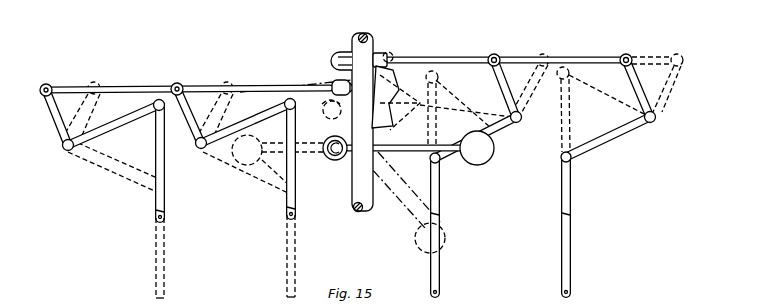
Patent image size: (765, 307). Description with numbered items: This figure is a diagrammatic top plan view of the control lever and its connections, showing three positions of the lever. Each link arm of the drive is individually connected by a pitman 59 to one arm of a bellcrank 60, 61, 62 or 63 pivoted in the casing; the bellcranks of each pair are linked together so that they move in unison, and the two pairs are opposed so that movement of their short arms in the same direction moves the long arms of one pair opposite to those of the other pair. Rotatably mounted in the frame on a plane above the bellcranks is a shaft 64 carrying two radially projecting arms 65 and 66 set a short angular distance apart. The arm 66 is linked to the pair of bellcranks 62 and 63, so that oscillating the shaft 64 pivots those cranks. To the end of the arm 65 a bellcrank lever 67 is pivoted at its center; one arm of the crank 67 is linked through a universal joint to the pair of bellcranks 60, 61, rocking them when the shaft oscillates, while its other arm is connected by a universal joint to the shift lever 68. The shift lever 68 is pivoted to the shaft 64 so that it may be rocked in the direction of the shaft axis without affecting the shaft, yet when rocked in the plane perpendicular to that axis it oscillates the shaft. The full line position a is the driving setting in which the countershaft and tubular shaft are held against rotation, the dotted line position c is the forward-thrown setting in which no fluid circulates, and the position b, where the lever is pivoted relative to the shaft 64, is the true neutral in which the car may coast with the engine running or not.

The pitman 59 is at (166, 207).
The bellcrank 60 is at (103, 124).
The bellcrank 61 is at (233, 123).
The bellcrank 62 is at (503, 133).
The bellcrank 63 is at (625, 130).
The shaft 64 is at (358, 189).
The arm 65 is at (386, 108).
The arm 66 is at (346, 54).
The bellcrank lever 67 is at (333, 112).
The shift lever 68 is at (415, 153).
The full line position a is at (477, 156).
The neutral position b is at (436, 238).
The dotted line position c is at (249, 167).